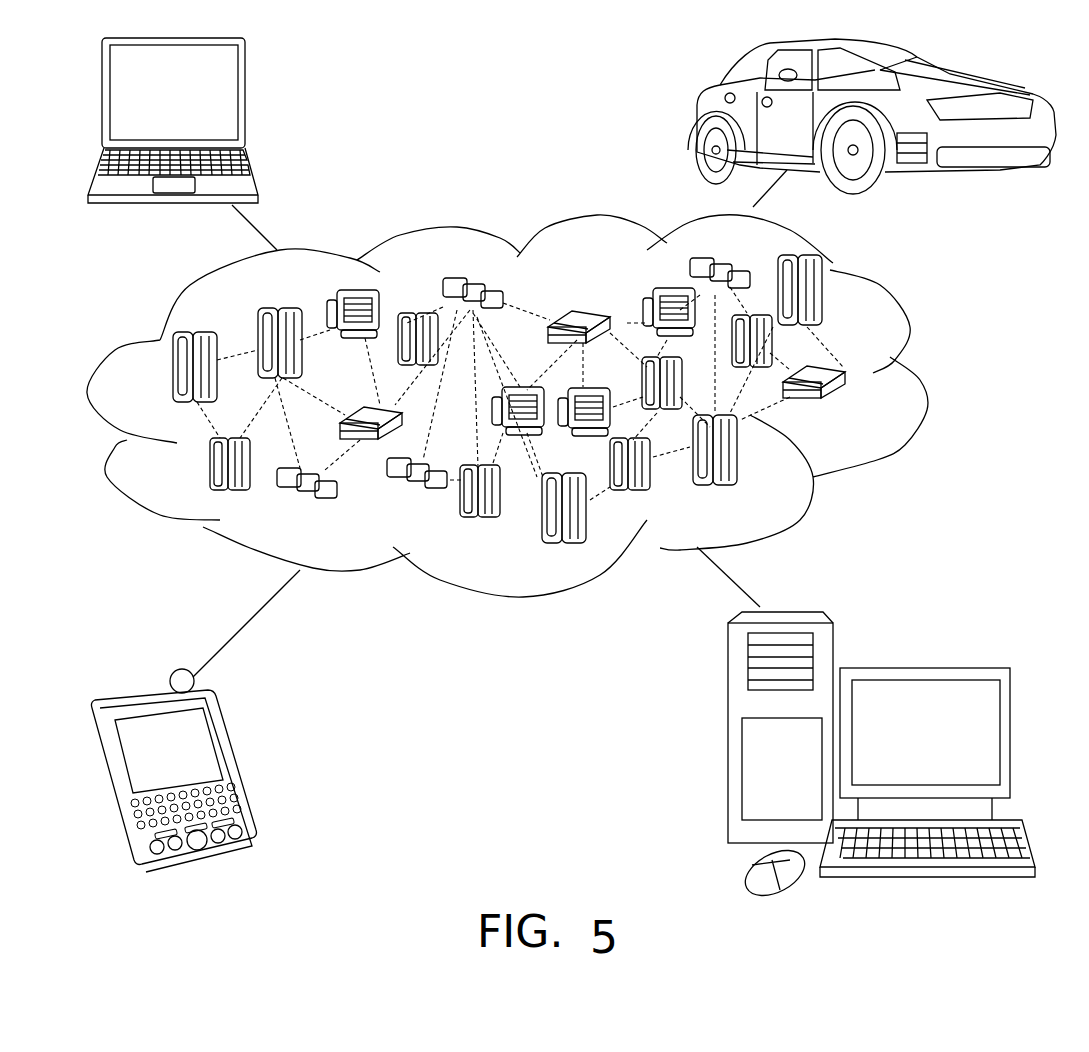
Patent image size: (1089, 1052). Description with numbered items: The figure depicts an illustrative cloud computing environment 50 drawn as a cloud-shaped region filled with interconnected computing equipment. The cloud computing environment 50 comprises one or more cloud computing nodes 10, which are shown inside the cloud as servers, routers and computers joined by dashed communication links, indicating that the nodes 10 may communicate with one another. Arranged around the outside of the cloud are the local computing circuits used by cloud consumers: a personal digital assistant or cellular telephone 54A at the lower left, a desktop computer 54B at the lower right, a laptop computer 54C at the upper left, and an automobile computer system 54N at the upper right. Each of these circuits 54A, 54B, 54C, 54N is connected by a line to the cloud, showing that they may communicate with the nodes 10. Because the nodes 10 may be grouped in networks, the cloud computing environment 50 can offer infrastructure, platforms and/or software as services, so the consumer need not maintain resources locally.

The cloud computing nodes 10 is at (870, 410).
The cloud computing environment 50 is at (925, 378).
The personal digital assistant or cellular telephone 54A is at (235, 766).
The desktop computer 54B is at (920, 667).
The laptop computer 54C is at (245, 102).
The automobile computer system 54N is at (698, 120).